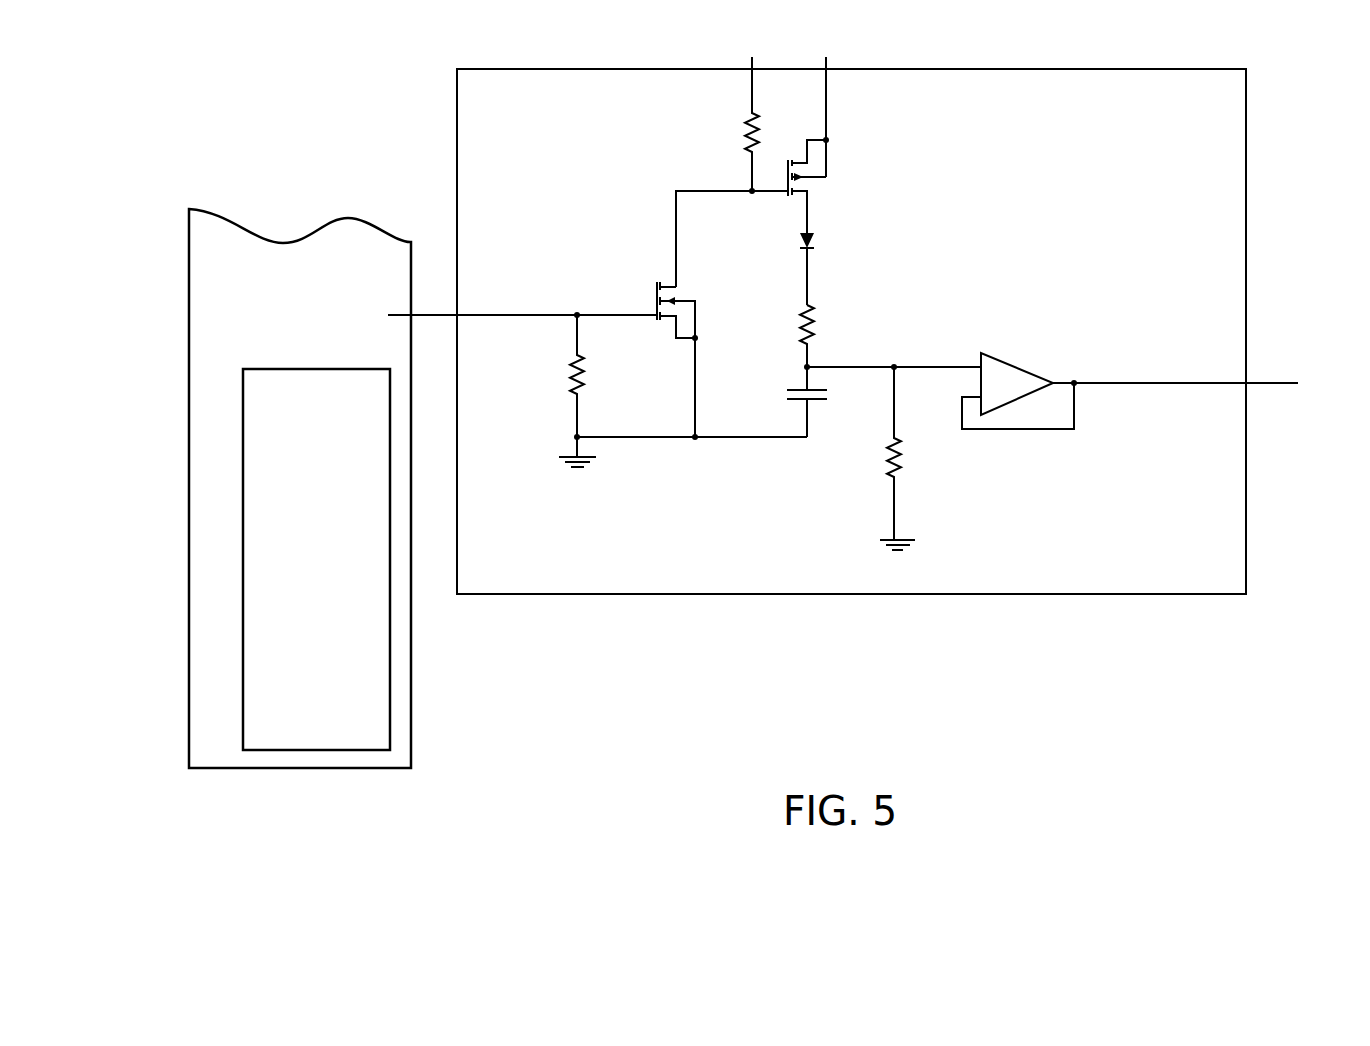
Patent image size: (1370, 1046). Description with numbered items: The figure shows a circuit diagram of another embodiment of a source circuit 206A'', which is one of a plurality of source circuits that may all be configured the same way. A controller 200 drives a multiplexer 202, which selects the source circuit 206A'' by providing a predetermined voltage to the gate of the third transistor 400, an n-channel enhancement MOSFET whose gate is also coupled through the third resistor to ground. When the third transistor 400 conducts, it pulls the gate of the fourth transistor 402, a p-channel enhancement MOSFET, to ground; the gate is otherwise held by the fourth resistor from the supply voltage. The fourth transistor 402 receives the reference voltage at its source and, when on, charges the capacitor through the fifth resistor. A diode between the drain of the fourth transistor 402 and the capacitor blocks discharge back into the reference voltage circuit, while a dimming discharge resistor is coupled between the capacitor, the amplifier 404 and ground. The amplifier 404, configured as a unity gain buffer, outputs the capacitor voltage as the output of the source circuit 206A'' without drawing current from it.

The controller 200 is at (300, 488).
The multiplexer 202 is at (316, 559).
The source circuit 206A'' is at (843, 300).
The third transistor 400 is at (653, 300).
The fourth transistor 402 is at (833, 158).
The amplifier 404 is at (1020, 362).